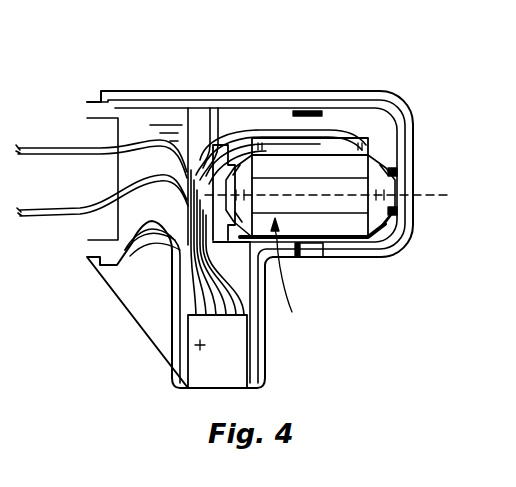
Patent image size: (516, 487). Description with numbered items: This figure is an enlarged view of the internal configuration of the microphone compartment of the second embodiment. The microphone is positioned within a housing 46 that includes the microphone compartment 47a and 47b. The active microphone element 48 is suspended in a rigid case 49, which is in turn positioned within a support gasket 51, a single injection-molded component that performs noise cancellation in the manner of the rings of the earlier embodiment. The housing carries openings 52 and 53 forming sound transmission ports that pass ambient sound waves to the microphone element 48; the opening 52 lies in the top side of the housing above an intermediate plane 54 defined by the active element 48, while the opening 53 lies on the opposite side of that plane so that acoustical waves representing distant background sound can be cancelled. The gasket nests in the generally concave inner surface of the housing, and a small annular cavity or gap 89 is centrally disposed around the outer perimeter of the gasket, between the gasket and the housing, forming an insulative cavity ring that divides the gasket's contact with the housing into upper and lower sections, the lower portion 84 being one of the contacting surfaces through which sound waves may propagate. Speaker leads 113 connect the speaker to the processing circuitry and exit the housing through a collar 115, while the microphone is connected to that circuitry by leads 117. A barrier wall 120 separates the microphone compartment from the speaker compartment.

The housing 46 is at (332, 91).
The microphone compartment 47a is at (392, 255).
The microphone compartment 47b is at (378, 120).
The active microphone element 48 is at (337, 195).
The rigid case 49 is at (365, 140).
The support gasket 51 is at (287, 275).
The opening 52 is at (300, 111).
The opening 53 is at (312, 258).
The intermediate plane 54 is at (338, 194).
The lower portion 84 is at (395, 160).
The annular cavity or gap 89 is at (400, 176).
The speaker leads 113 is at (40, 215).
The collar 115 is at (195, 345).
The leads 117 is at (213, 122).
The barrier wall 120 is at (133, 127).